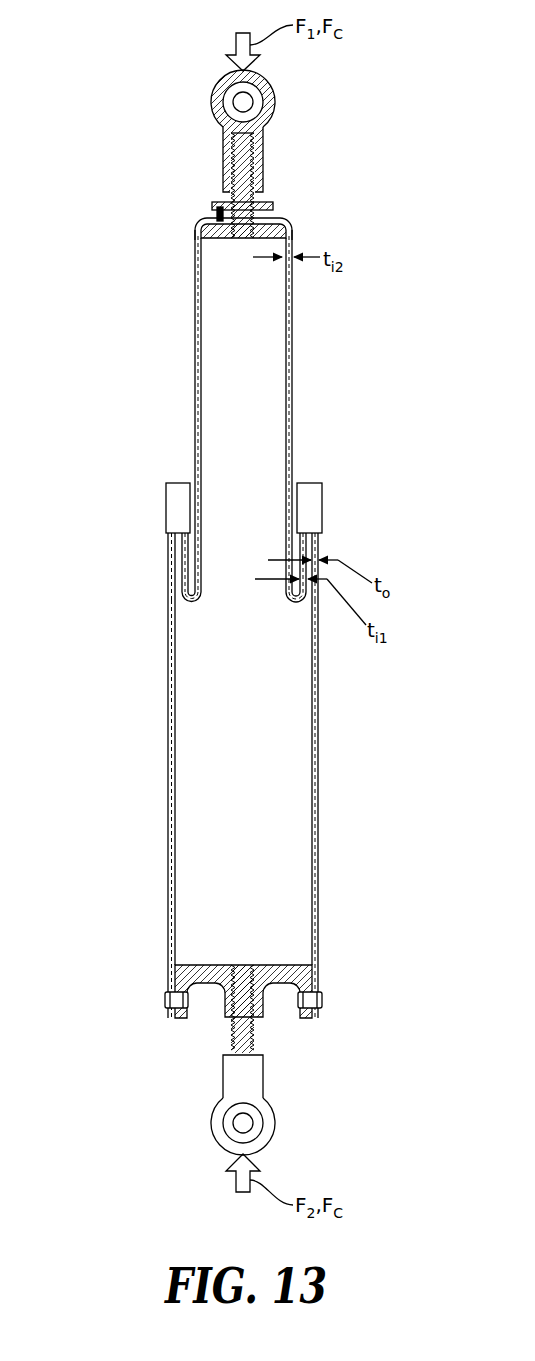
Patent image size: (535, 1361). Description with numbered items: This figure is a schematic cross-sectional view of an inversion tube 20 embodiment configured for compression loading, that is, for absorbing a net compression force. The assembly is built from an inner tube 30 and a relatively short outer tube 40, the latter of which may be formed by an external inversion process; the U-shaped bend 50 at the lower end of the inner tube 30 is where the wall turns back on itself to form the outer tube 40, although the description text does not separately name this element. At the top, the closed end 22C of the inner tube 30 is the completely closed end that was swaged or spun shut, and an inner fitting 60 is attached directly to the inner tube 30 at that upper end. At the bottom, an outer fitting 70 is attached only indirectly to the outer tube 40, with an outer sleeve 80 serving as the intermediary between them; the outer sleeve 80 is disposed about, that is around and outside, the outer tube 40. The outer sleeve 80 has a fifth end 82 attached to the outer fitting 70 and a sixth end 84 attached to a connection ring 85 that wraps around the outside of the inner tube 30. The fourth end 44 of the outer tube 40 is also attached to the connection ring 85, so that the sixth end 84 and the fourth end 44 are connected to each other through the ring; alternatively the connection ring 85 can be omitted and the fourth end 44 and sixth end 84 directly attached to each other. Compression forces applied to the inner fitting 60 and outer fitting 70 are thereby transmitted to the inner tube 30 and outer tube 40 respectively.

The inversion tube 20 is at (182, 172).
The closed end 22C is at (248, 287).
The inner tube 30 is at (197, 365).
The outer tube 40 is at (182, 563).
The fourth end 44 is at (173, 545).
The U-bend 50 is at (189, 603).
The inner fitting 60 is at (283, 177).
The outer fitting 70 is at (280, 1055).
The outer sleeve 80 is at (168, 848).
The fifth end 82 is at (167, 980).
The sixth end 84 is at (320, 545).
The connection ring 85 is at (175, 500).